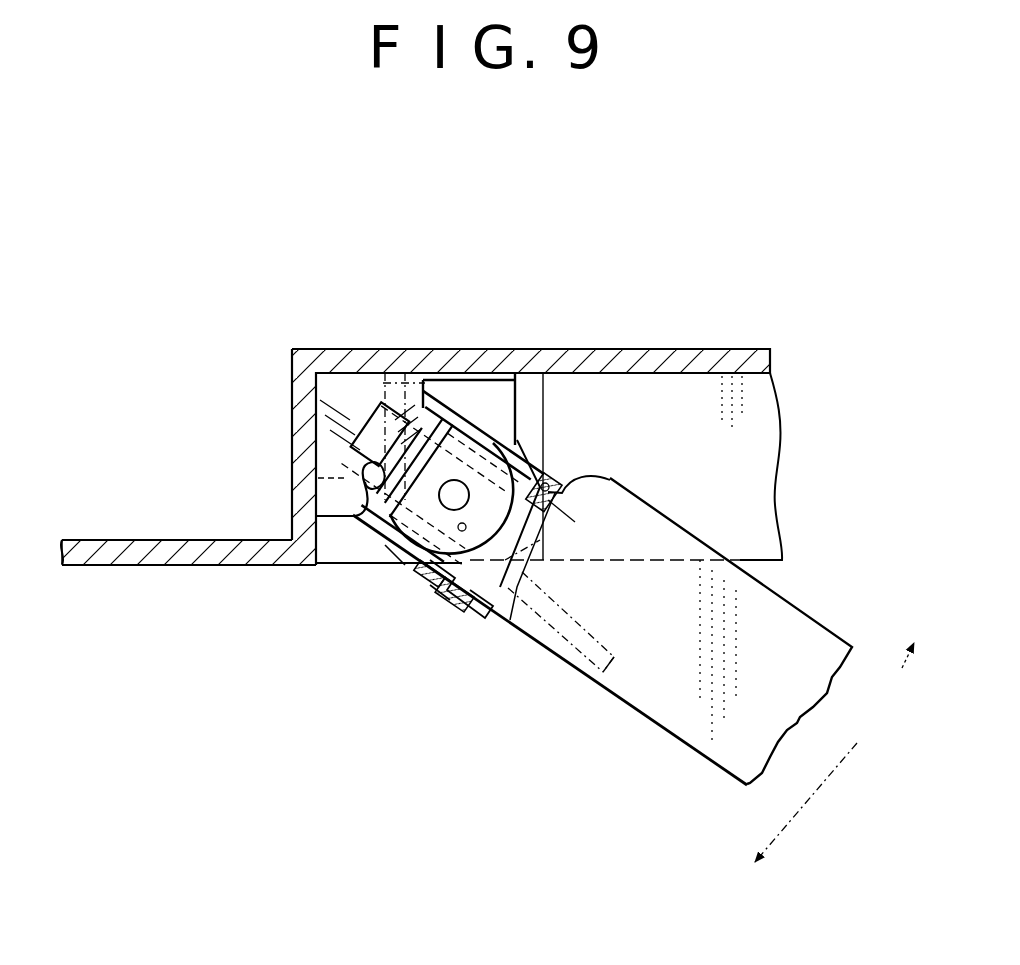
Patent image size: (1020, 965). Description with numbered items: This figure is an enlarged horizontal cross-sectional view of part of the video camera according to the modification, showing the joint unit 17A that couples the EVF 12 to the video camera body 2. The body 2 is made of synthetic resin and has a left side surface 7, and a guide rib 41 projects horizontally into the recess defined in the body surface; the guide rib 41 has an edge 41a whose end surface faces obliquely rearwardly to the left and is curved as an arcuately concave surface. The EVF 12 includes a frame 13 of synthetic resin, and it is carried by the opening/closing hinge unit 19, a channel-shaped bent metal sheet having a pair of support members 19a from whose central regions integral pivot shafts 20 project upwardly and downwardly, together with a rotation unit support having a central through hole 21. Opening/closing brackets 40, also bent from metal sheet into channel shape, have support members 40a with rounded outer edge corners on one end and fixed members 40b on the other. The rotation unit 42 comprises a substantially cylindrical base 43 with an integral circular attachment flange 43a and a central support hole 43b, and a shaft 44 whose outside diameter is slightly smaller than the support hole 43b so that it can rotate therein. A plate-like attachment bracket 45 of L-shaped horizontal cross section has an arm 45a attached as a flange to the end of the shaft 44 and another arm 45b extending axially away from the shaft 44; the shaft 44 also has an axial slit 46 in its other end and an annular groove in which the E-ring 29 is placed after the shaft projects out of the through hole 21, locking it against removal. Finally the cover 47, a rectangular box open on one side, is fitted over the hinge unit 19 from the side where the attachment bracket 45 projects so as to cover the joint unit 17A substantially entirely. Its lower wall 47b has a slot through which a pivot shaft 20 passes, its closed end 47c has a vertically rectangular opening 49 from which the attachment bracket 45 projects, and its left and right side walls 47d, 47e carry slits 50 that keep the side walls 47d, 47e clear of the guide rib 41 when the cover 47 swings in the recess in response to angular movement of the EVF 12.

The video camera body 2 is at (85, 568).
The left side surface 7 is at (146, 552).
The EVF 12 is at (708, 765).
The frame 13 is at (800, 633).
The joint unit 17A is at (553, 393).
The opening/closing hinge unit 19 is at (545, 560).
The support members 19a is at (546, 470).
The pivot shafts 20 is at (396, 552).
The through hole 21 is at (418, 380).
The E-ring 29 is at (342, 412).
The opening/closing brackets 40 is at (510, 372).
The support members 40a is at (530, 372).
The fixed members 40b is at (455, 378).
The guide rib 41 is at (362, 386).
The edge 41a is at (330, 456).
The rotation unit 42 is at (438, 596).
The base 43 is at (432, 612).
The attachment flange 43a is at (345, 545).
The support hole 43b is at (396, 590).
The shaft 44 is at (346, 400).
The attachment bracket 45 is at (552, 588).
The arm 45a is at (560, 528).
The arm 45b is at (598, 662).
The slit 46 is at (401, 386).
The cover 47 is at (488, 604).
The lower wall 47b is at (318, 478).
The closed end 47c is at (522, 604).
The side wall 47d is at (560, 480).
The side wall 47e is at (474, 618).
The opening 49 is at (592, 490).
The slits 50 is at (412, 596).